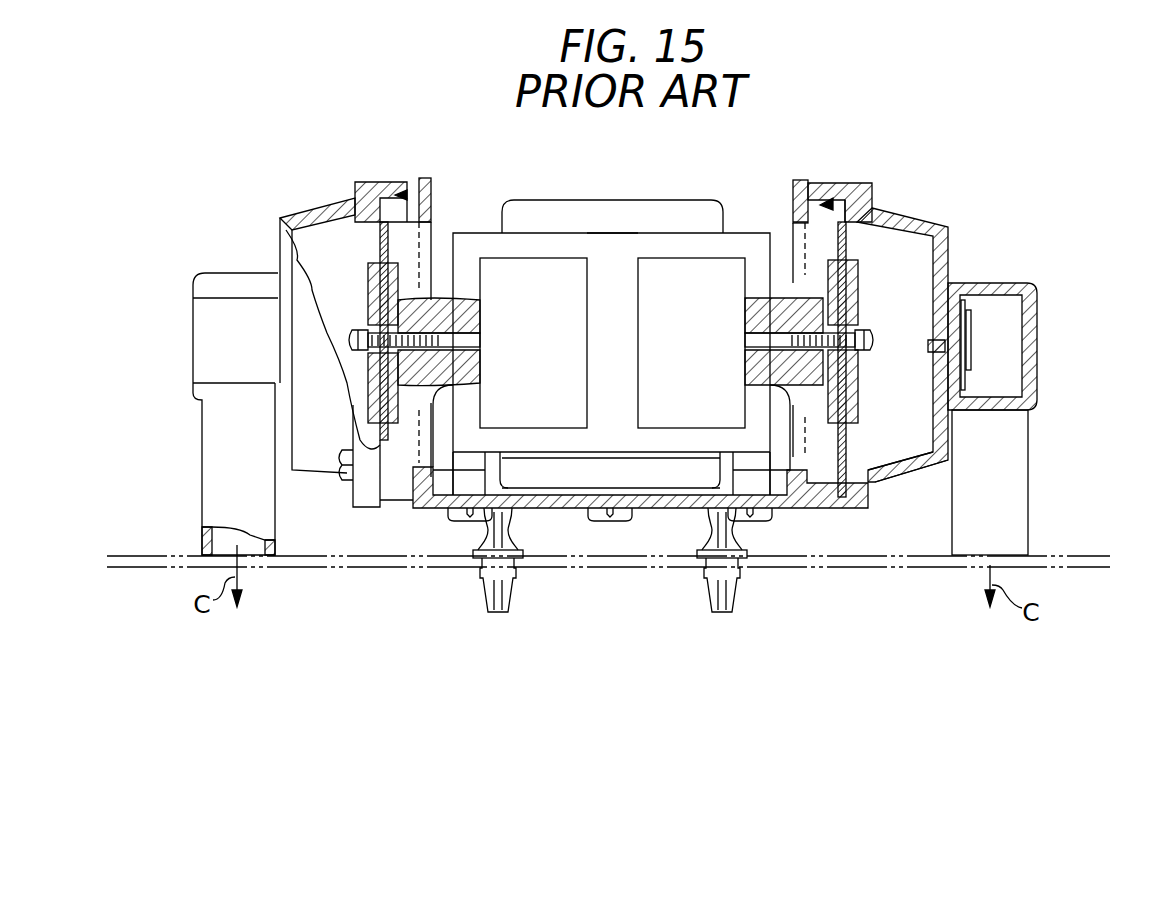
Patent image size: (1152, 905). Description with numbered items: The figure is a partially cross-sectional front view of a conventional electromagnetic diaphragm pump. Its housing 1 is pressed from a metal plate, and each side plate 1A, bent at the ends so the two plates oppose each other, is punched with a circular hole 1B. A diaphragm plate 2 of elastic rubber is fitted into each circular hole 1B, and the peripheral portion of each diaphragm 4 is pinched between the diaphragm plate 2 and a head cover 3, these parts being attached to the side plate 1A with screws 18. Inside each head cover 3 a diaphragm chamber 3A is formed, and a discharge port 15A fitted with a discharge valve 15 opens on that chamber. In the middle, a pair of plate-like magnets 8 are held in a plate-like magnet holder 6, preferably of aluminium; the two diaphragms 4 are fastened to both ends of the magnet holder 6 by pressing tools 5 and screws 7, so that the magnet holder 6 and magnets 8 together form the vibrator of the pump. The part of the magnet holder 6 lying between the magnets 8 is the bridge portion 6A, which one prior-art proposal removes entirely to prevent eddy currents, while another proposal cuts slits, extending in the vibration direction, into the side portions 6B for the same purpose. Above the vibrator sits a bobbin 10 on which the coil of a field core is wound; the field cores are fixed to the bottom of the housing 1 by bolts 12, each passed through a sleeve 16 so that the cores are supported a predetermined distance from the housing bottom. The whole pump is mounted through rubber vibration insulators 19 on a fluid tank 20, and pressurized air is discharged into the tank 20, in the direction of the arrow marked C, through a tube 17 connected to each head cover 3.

The housing 1 is at (800, 511).
The side plate 1A is at (423, 178).
The circular hole 1B is at (431, 217).
The diaphragm plate 2 is at (393, 180).
The head cover 3 is at (282, 226).
The diaphragm chamber 3A is at (917, 427).
The diaphragm 4 is at (380, 240).
The pressing tool 5 is at (376, 262).
The magnet holder 6 is at (763, 233).
The bridge portion 6A is at (616, 258).
The side portion 6B is at (467, 420).
The screw 7 is at (352, 332).
The magnet 8 is at (498, 265).
The bobbin 10 is at (560, 214).
The bolt 12 is at (465, 516).
The discharge valve 15 is at (965, 302).
The discharge port 15A is at (970, 375).
The sleeve 16 is at (445, 482).
The tube 17 is at (215, 438).
The screw 18 is at (340, 465).
The rubber vibration insulator 19 is at (512, 589).
The fluid tank 20 is at (1102, 556).